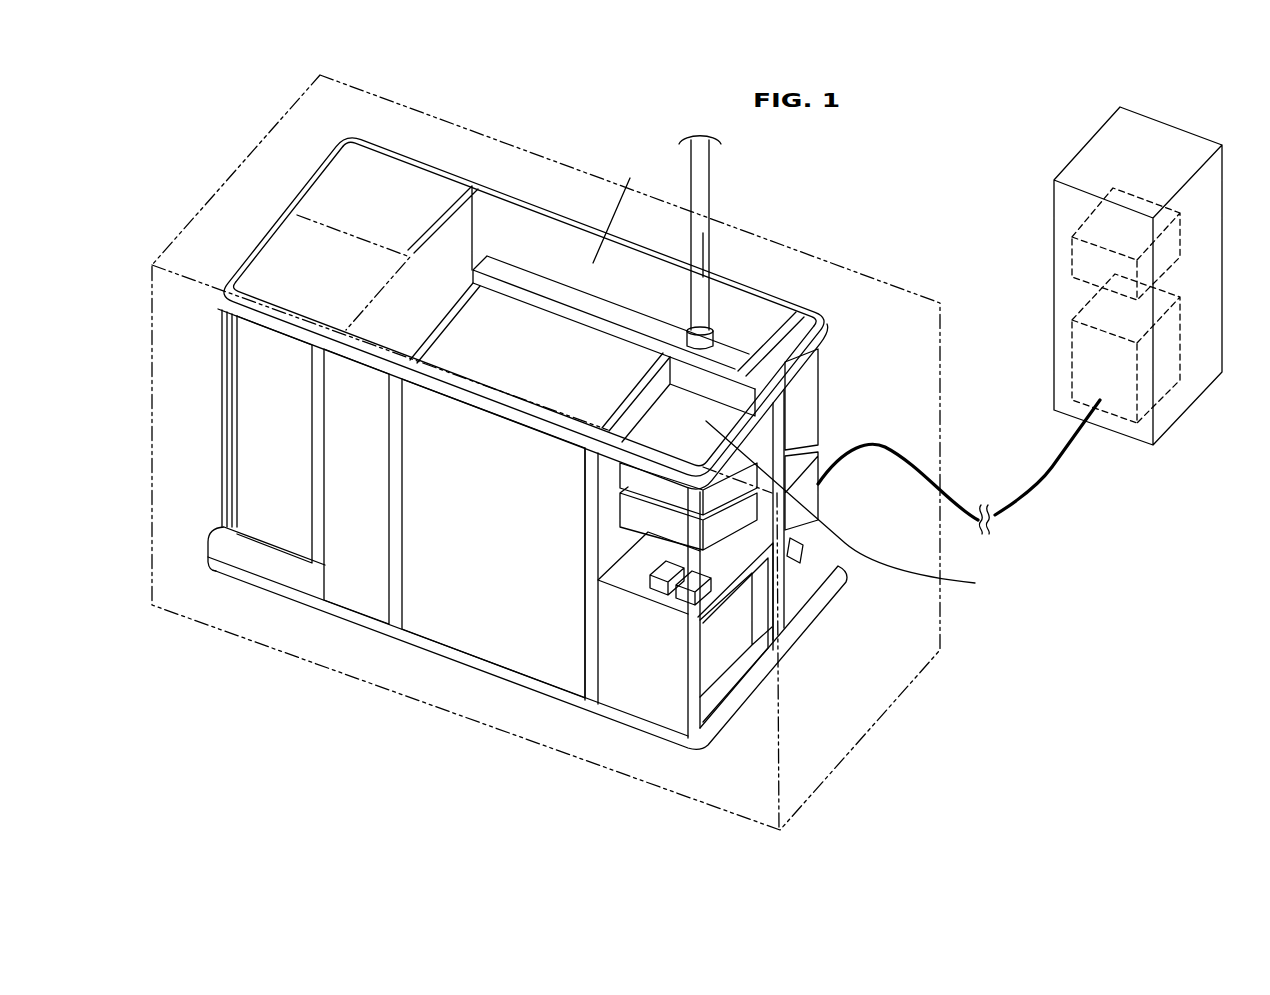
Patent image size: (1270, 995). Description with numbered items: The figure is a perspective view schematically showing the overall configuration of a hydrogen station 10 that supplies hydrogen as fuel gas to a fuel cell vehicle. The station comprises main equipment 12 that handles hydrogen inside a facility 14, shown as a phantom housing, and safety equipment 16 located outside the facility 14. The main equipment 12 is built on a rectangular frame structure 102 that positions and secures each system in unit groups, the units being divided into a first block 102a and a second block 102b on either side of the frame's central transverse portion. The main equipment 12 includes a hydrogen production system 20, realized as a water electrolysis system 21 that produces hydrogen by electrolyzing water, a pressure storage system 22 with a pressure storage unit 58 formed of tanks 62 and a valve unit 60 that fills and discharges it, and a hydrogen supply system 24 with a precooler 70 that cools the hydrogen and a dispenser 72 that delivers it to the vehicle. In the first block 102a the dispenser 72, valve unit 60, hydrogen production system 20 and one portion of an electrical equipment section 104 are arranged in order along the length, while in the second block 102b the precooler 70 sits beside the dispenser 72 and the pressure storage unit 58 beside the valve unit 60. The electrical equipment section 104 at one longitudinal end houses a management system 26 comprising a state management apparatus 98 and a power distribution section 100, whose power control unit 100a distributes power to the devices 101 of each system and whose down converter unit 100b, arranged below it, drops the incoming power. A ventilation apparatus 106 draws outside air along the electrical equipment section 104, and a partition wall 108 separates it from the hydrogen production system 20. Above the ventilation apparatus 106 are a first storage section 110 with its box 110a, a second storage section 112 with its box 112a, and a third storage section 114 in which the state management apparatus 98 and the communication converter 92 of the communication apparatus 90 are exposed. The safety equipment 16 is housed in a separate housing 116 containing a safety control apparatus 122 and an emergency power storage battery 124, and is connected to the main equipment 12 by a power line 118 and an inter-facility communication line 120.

The hydrogen station 10 is at (720, 96).
The main equipment 12 is at (373, 136).
The facility 14 is at (766, 231).
The safety equipment 16 is at (1086, 124).
The hydrogen production system 20 is at (497, 516).
The water electrolysis system 21 is at (442, 623).
The pressure storage system 22 is at (567, 100).
The hydrogen supply system 24 is at (178, 108).
The management system 26 is at (888, 590).
The pressure storage unit 58 is at (528, 225).
The valve unit 60 is at (430, 277).
The tank 62 is at (722, 350).
The precooler 70 is at (328, 190).
The dispenser 72 is at (285, 238).
The communication apparatus 90 is at (662, 582).
The communication converter 92 is at (600, 587).
The state management apparatus 98 is at (777, 637).
The power distribution section 100 is at (795, 540).
The power control unit 100a is at (812, 397).
The down converter unit 100b is at (808, 493).
The devices 101 is at (562, 665).
The frame structure 102 is at (258, 590).
The first block 102a is at (239, 255).
The second block 102b is at (335, 148).
The electrical equipment section 104 is at (812, 394).
The ventilation apparatus 106 is at (717, 653).
The partition wall 108 is at (592, 642).
The first storage section 110 is at (608, 488).
The box 110a is at (627, 474).
The second storage section 112 is at (608, 518).
The box 112a is at (633, 512).
The third storage section 114 is at (623, 575).
The housing 116 is at (1070, 163).
The power line 118 is at (974, 476).
The inter-facility communication line 120 is at (1017, 512).
The safety control apparatus 122 is at (1087, 253).
The emergency power storage battery 124 is at (1087, 357).